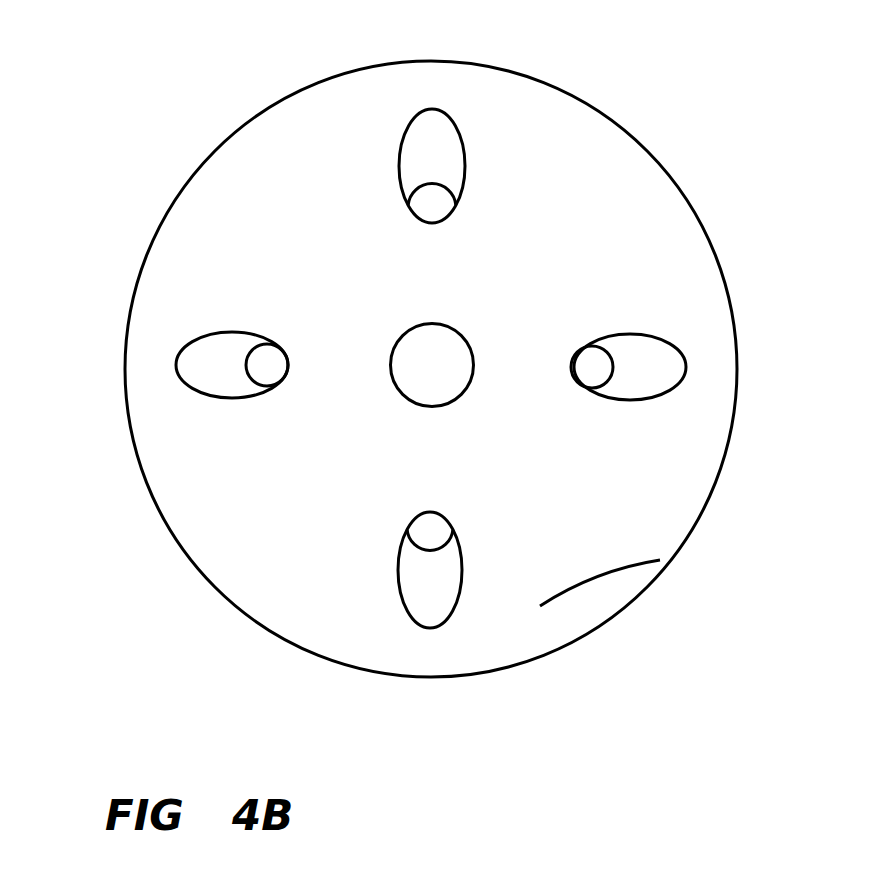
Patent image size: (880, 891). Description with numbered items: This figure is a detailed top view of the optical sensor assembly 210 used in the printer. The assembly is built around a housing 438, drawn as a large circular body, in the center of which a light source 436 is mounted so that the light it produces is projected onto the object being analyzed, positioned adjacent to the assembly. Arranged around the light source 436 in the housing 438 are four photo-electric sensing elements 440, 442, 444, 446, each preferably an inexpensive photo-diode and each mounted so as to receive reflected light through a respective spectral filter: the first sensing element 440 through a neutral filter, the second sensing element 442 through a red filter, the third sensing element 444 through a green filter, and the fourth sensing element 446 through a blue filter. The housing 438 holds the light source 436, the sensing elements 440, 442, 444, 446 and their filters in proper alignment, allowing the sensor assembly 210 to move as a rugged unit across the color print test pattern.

The optical sensor assembly 210 is at (190, 112).
The light source 436 is at (438, 363).
The housing 438 is at (583, 565).
The first sensing element 440 is at (595, 370).
The second sensing element 442 is at (268, 370).
The third sensing element 444 is at (432, 202).
The fourth sensing element 446 is at (432, 532).